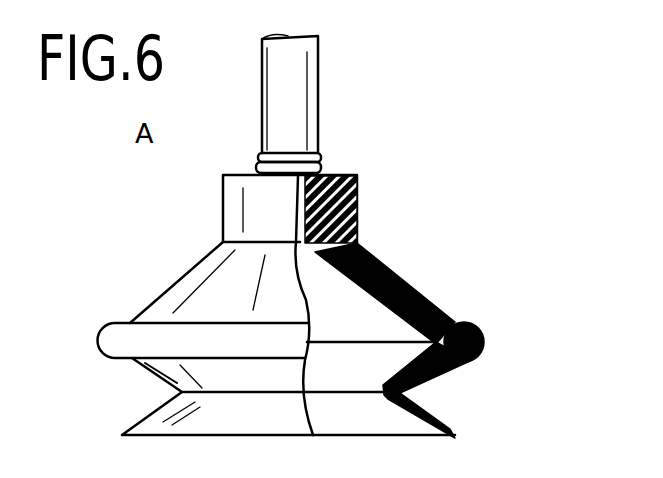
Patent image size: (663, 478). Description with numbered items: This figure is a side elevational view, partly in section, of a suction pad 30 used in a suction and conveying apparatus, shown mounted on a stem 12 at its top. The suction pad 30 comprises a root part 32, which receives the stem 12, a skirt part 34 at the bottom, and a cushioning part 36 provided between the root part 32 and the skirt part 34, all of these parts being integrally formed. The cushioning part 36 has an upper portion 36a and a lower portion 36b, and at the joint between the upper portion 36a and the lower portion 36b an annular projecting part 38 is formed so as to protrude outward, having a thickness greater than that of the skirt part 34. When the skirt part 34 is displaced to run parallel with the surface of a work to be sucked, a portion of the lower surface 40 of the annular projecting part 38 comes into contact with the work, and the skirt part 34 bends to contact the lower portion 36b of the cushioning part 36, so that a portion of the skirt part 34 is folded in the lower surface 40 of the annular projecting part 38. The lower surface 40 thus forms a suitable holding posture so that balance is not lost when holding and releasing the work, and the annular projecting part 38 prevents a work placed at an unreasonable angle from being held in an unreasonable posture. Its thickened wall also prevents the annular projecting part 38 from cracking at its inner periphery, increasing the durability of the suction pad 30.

The stem 12 is at (290, 82).
The suction pad 30 is at (425, 113).
The root part 32 is at (358, 185).
The skirt part 34 is at (163, 413).
The cushioning part 36 is at (190, 282).
The upper portion of the cushioning part 36a is at (403, 273).
The lower portion of the cushioning part 36b is at (433, 371).
The annular projecting part 38 is at (484, 342).
The lower surface of the annular projecting part 40 is at (120, 359).